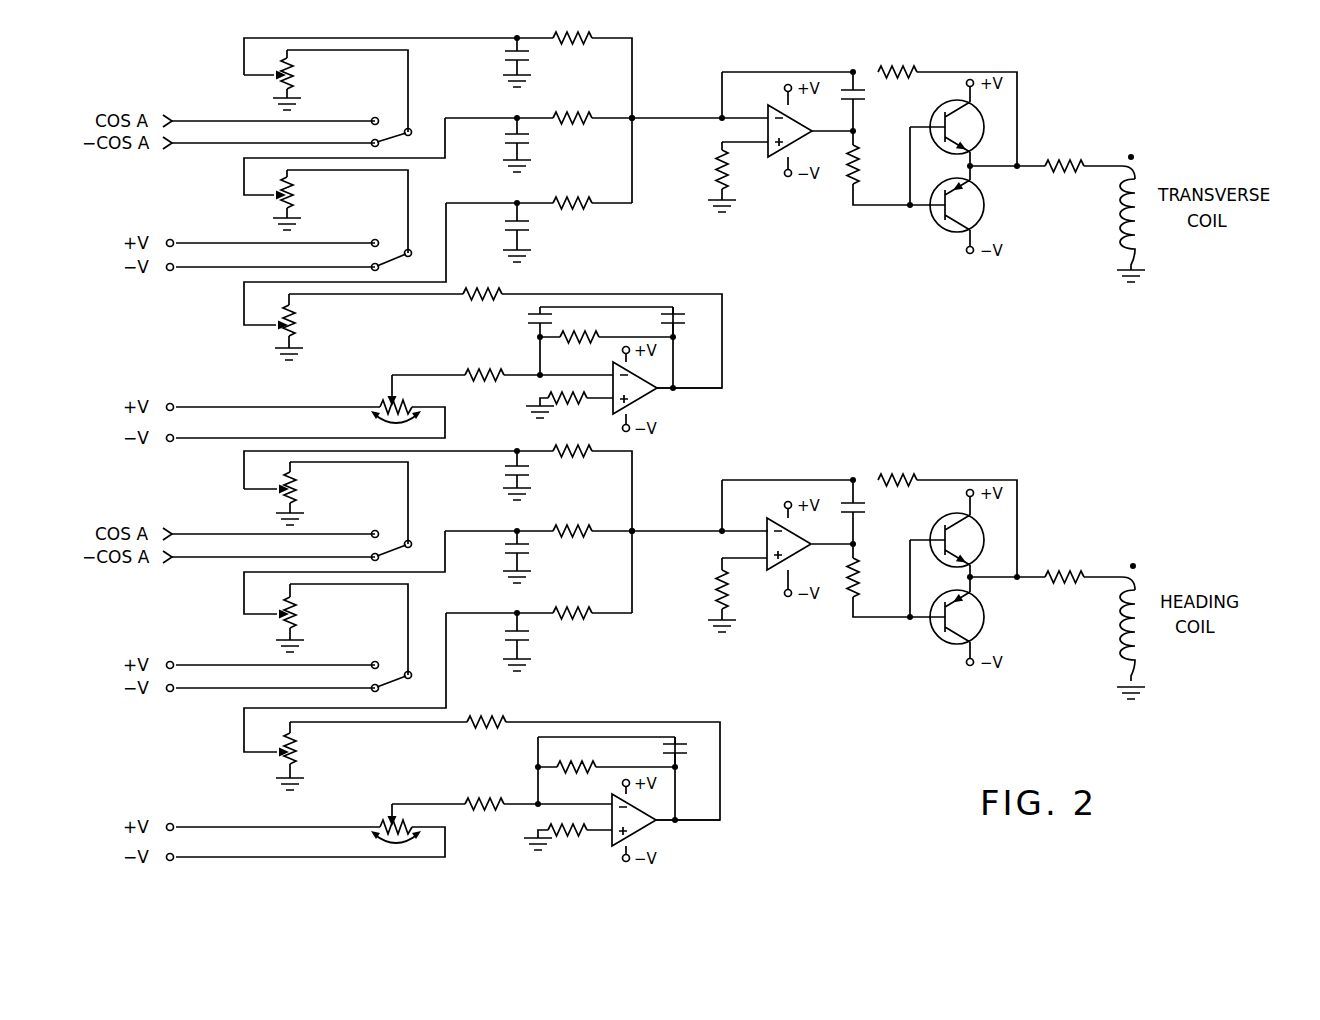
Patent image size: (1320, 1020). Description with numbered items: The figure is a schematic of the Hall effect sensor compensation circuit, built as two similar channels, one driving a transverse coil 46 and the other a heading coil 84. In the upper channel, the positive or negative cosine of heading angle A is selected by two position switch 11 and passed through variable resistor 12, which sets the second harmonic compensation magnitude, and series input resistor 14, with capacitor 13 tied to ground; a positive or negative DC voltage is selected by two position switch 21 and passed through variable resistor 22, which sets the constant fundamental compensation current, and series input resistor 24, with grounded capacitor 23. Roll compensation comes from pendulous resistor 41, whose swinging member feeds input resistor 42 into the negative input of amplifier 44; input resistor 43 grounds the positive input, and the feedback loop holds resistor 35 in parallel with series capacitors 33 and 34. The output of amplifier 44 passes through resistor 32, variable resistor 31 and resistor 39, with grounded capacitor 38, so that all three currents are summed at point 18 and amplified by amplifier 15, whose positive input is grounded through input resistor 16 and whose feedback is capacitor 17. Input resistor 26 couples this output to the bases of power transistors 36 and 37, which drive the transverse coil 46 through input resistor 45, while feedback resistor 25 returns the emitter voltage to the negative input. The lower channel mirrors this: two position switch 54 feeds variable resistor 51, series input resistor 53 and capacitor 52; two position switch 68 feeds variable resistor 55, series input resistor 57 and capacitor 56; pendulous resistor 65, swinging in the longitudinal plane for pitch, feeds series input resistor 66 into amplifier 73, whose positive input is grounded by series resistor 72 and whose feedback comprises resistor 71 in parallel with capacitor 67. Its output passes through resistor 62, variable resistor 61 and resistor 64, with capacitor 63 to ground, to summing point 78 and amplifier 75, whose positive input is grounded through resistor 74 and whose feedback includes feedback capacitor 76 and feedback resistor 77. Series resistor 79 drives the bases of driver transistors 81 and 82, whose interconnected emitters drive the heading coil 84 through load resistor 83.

The two position switch 11 is at (392, 128).
The variable resistor 12 is at (297, 79).
The capacitor 13 is at (505, 62).
The series input resistor 14 is at (572, 42).
The amplifier 15 is at (793, 126).
The input resistor 16 is at (732, 167).
The feedback capacitor 17 is at (867, 96).
The summing point 18 is at (636, 114).
The two position switch 21 is at (395, 245).
The variable resistor 22 is at (297, 200).
The capacitor 23 is at (504, 138).
The series input resistor 24 is at (572, 121).
The feedback resistor 25 is at (890, 70).
The input resistor 26 is at (860, 170).
The variable resistor 31 is at (300, 329).
The resistor 32 is at (479, 290).
The capacitor 33 is at (527, 320).
The capacitor 34 is at (687, 320).
The resistor 35 is at (590, 332).
The power transistor 36 is at (952, 151).
The power transistor 37 is at (940, 223).
The capacitor 38 is at (530, 229).
The resistor 39 is at (584, 206).
The pendulous resistor 41 is at (385, 399).
The input resistor 42 is at (482, 368).
The input resistor 43 is at (575, 403).
The amplifier 44 is at (645, 394).
The input resistor 45 is at (1062, 161).
The transverse coil 46 is at (1122, 224).
The variable resistor 51 is at (300, 488).
The capacitor 52 is at (503, 470).
The series input resistor 53 is at (582, 455).
The two position switch 54 is at (393, 540).
The variable resistor 55 is at (300, 618).
The capacitor 56 is at (530, 549).
The series input resistor 57 is at (576, 525).
The variable resistor 61 is at (300, 756).
The resistor 62 is at (481, 728).
The capacitor 63 is at (530, 634).
The resistor 64 is at (578, 608).
The pendulous resistor 65 is at (385, 823).
The series input resistor 66 is at (486, 810).
The capacitor 67 is at (688, 750).
The two position switch 68 is at (393, 667).
The resistor 71 is at (580, 770).
The series resistor 72 is at (576, 836).
The amplifier 73 is at (650, 828).
The resistor 74 is at (710, 590).
The amplifier 75 is at (795, 542).
The feedback capacitor 76 is at (867, 507).
The feedback resistor 77 is at (887, 477).
The summing point 78 is at (640, 528).
The series resistor 79 is at (847, 586).
The driver transistor 81 is at (953, 517).
The driver transistor 82 is at (941, 636).
The load resistor 83 is at (1059, 574).
The heading coil 84 is at (1122, 610).